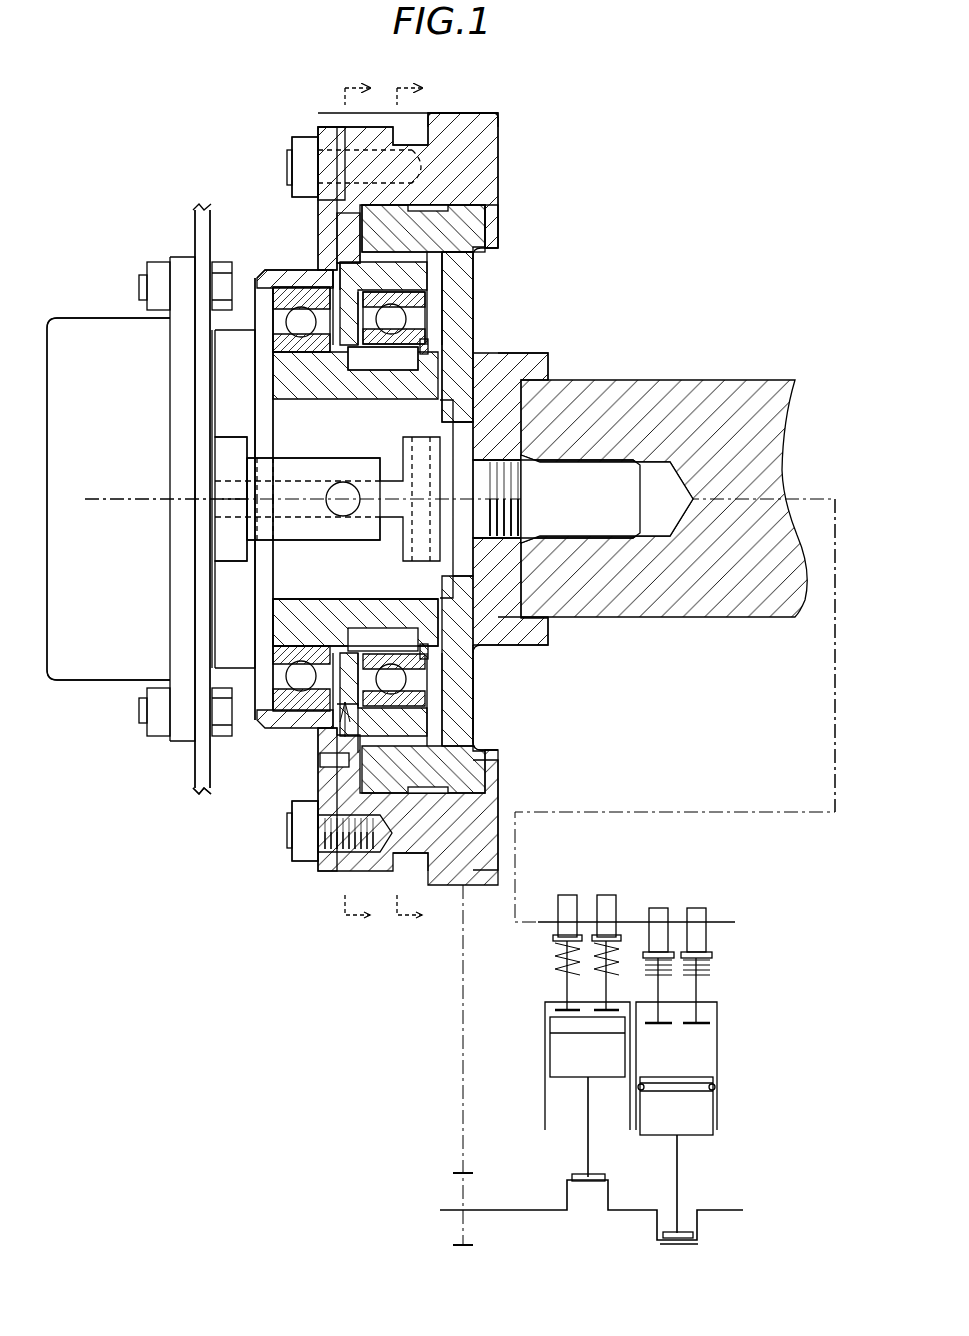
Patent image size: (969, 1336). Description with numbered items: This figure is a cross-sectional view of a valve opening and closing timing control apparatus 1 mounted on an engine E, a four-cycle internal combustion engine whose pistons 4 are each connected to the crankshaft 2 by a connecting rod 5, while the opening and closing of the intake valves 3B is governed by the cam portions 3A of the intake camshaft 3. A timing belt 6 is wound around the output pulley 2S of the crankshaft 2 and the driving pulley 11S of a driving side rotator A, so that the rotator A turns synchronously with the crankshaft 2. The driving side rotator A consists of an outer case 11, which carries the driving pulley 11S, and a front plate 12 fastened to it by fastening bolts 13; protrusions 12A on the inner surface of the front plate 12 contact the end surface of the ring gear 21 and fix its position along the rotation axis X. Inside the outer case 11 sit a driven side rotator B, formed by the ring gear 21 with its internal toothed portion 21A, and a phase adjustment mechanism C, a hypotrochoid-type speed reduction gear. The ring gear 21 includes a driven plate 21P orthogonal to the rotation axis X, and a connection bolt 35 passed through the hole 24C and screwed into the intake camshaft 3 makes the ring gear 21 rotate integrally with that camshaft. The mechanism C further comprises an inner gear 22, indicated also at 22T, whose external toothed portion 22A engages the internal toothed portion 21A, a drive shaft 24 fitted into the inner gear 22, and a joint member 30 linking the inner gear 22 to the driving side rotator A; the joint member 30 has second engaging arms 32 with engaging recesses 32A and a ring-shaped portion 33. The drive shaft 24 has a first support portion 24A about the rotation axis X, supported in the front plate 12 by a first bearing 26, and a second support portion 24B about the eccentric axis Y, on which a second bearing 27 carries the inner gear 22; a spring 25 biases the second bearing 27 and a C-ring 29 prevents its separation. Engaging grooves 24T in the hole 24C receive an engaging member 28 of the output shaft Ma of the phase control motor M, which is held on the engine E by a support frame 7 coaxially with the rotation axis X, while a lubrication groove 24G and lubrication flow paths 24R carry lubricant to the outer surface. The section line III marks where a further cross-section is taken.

The valve opening and closing timing control apparatus 1 is at (243, 132).
The crankshaft 2 is at (506, 1208).
The output pulley 2S is at (462, 1193).
The intake camshaft 3 is at (720, 378).
The cam portions 3A is at (606, 895).
The intake valves 3B is at (603, 1012).
The pistons 4 is at (570, 1078).
The connecting rod 5 is at (588, 1158).
The timing belt 6 is at (462, 1020).
The support frame 7 is at (197, 782).
The outer case 11 is at (492, 150).
The driving pulley 11S is at (465, 113).
The front plate 12 is at (340, 122).
The protrusions 12A is at (345, 822).
The fastening bolts 13 is at (293, 165).
The ring gear 21 is at (455, 200).
The internal toothed portion 21A is at (486, 228).
The driven plate 21P is at (540, 375).
The inner gear 22 is at (463, 282).
The external toothed portion 22A is at (485, 740).
The tooth portion 22T is at (340, 265).
The drive shaft 24 is at (270, 370).
The first support portion 24A is at (272, 627).
The second support portion 24B is at (512, 647).
The hole 24C is at (262, 410).
The lubrication groove 24G is at (258, 597).
The lubrication flow path 24R is at (345, 612).
The engaging grooves 24T is at (233, 522).
The spring 25 is at (392, 370).
The first bearing 26 is at (300, 322).
The second bearing 27 is at (410, 320).
The engaging member 28 is at (343, 490).
The C-ring 29 is at (480, 655).
The joint member 30 is at (330, 770).
The second engaging arms 32 is at (325, 215).
The engaging recesses 32A is at (345, 240).
The ring-shaped portion 33 is at (343, 716).
The connection bolt 35 is at (648, 505).
The driving side rotator A is at (343, 125).
The driven side rotator B is at (478, 698).
The phase adjustment mechanism C is at (395, 795).
The engine E is at (752, 150).
The phase control motor M is at (92, 318).
The output shaft Ma is at (345, 458).
The rotation axis X is at (152, 500).
The eccentric axis Y is at (232, 462).
The section lines III is at (379, 502).